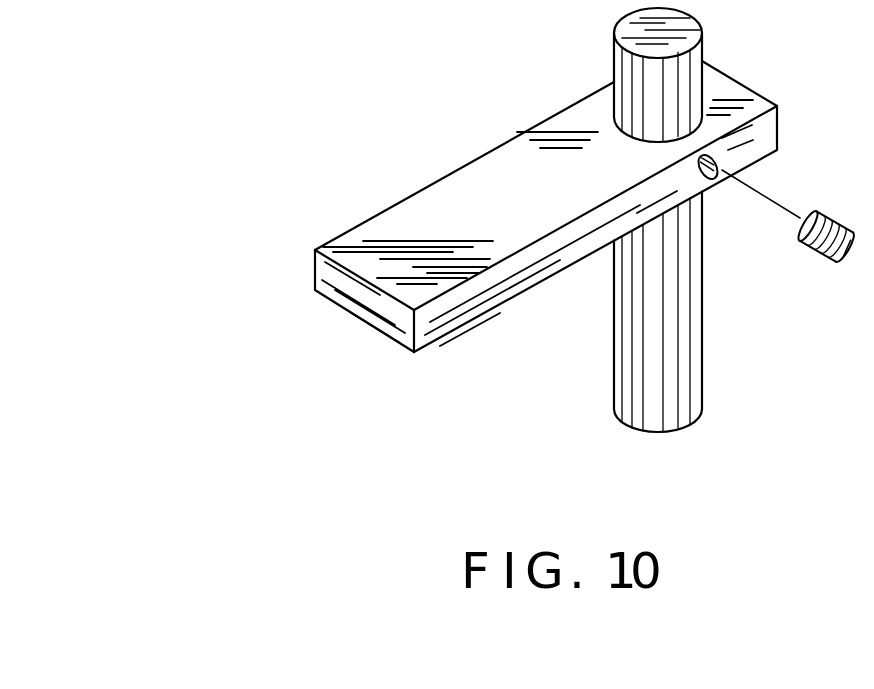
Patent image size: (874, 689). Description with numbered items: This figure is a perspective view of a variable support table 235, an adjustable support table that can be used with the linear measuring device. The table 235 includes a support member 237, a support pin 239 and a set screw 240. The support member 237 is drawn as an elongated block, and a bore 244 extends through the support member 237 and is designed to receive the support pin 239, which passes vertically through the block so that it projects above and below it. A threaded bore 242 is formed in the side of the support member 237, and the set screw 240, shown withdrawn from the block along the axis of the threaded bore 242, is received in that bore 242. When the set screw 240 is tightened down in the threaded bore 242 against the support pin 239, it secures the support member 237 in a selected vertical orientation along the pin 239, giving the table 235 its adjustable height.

The variable support table 235 is at (757, 82).
The support member 237 is at (397, 222).
The support pin 239 is at (702, 337).
The set screw 240 is at (810, 243).
The threaded bore 242 is at (720, 170).
The bore 244 is at (613, 128).